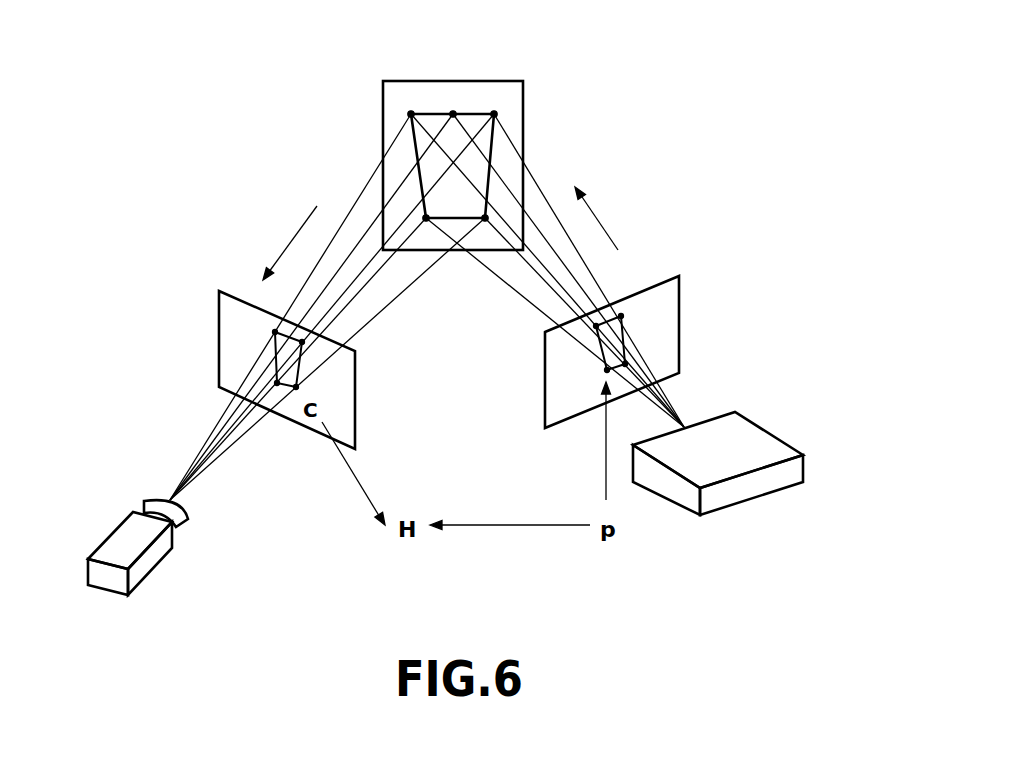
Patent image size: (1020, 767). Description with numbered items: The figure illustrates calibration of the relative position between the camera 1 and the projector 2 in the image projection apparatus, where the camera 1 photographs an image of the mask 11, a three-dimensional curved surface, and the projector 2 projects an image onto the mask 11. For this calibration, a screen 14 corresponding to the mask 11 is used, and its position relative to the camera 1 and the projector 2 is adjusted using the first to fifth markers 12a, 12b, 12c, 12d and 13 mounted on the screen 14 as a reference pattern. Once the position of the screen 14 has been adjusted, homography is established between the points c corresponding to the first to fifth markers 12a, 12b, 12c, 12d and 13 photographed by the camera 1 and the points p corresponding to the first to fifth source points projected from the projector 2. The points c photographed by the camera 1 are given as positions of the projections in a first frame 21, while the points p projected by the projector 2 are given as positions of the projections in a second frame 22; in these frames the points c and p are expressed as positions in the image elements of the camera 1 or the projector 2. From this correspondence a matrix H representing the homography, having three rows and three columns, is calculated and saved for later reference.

The camera 1 is at (115, 548).
The projector 2 is at (753, 437).
The mask 11 is at (453, 202).
The first marker 12a is at (494, 114).
The second marker 12b is at (485, 218).
The third marker 12c is at (426, 218).
The fourth marker 12d is at (411, 114).
The fifth marker 13 is at (453, 114).
The screen 14 is at (493, 80).
The first frame 21 is at (230, 323).
The second frame 22 is at (662, 323).